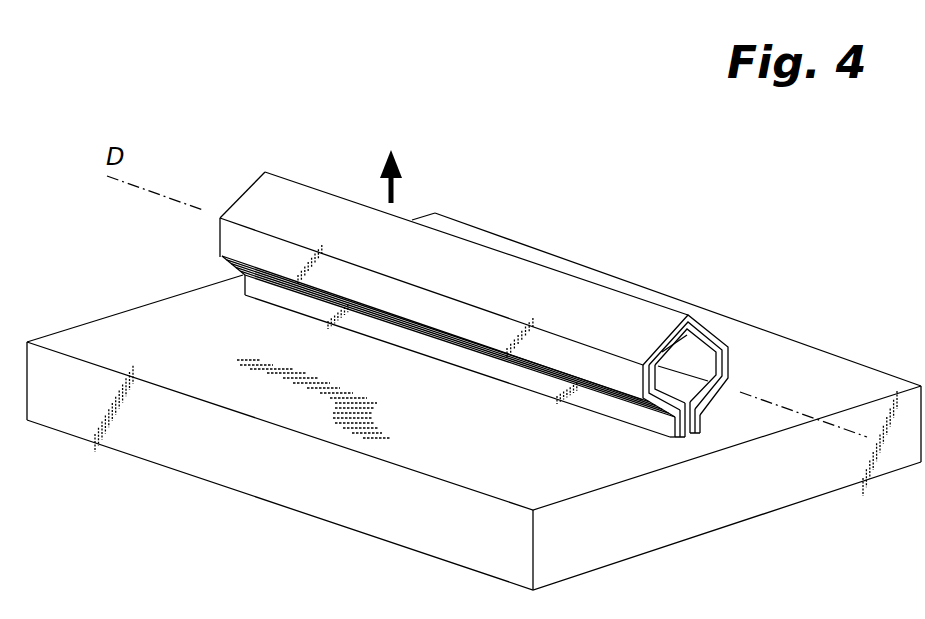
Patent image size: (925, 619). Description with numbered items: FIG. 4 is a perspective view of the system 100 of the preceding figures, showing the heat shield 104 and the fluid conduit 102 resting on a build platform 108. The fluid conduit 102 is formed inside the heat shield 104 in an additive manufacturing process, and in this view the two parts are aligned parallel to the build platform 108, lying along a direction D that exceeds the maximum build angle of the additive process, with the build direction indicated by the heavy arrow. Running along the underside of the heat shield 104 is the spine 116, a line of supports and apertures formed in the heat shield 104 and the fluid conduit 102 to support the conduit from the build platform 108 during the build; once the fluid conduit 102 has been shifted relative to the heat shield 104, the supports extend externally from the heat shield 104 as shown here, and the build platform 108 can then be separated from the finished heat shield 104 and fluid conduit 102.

The system 100 is at (501, 295).
The fluid conduit 102 is at (700, 333).
The heat shield 104 is at (627, 317).
The build platform 108 is at (850, 377).
The spine 116 is at (613, 405).